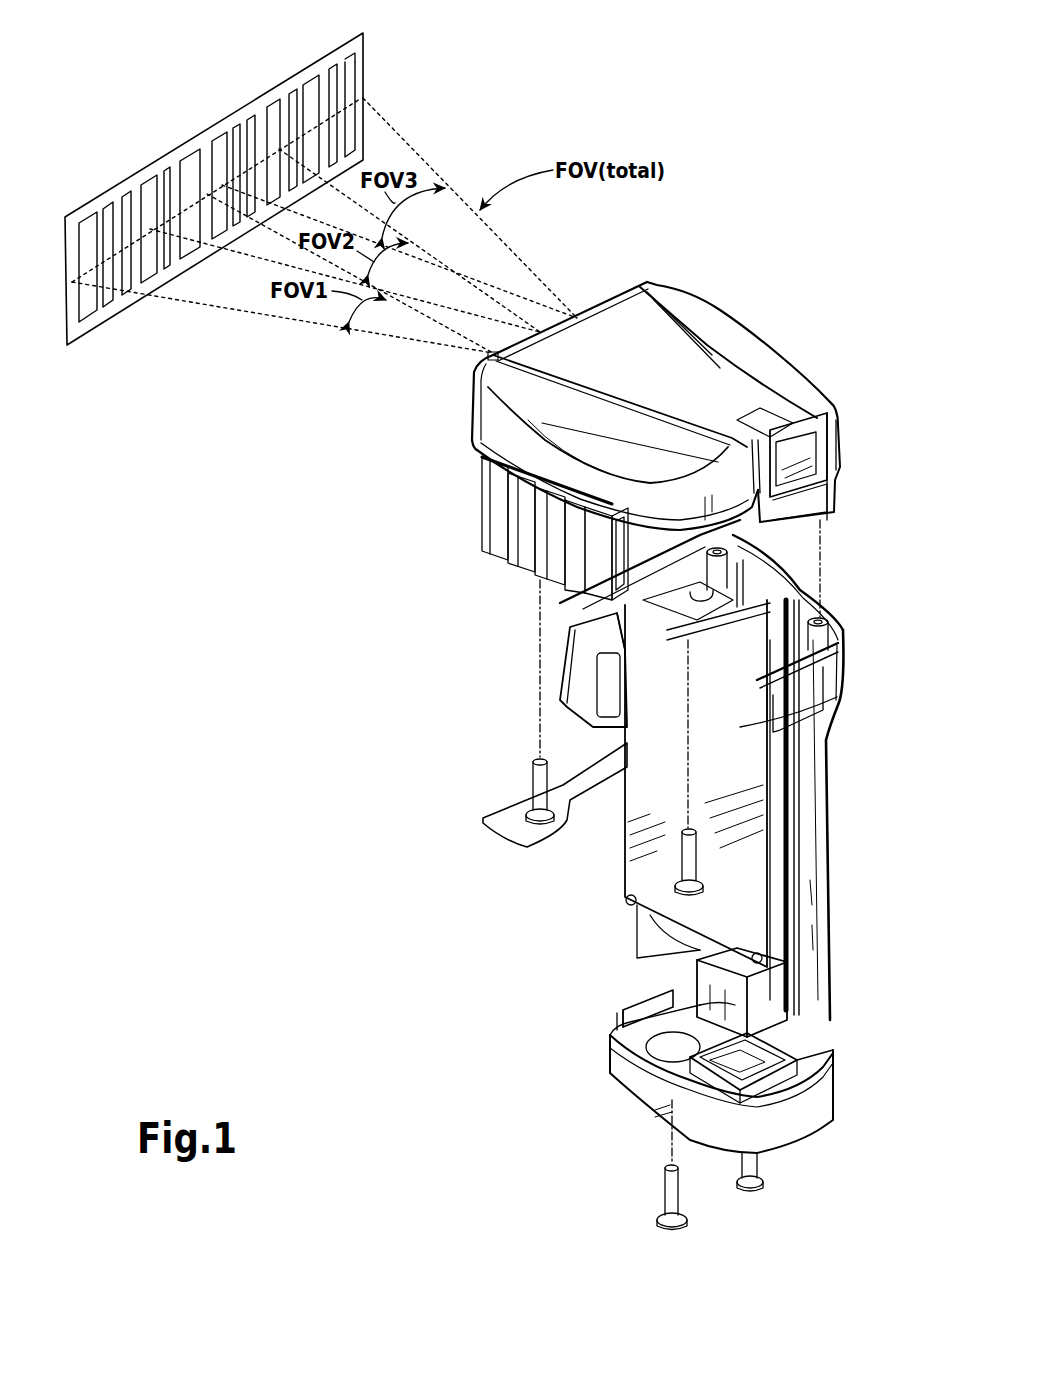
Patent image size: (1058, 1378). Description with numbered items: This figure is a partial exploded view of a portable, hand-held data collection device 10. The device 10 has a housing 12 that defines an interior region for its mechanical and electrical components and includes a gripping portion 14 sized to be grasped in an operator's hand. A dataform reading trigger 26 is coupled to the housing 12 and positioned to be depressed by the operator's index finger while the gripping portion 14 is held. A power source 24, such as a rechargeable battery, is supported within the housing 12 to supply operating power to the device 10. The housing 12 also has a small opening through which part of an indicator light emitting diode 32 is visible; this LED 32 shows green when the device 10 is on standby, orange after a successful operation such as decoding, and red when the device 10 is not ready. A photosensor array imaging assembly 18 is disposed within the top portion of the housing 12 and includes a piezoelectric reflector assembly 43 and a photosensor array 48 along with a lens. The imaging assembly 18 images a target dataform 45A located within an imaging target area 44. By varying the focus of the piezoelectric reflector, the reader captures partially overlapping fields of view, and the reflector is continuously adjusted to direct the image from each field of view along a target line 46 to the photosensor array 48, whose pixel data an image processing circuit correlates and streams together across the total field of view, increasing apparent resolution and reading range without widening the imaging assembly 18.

The portable data collection device 10 is at (766, 312).
The housing 12 is at (840, 753).
The gripping portion 14 is at (810, 877).
The photosensor array imaging assembly 18 is at (499, 508).
The power source 24 is at (767, 1000).
The dataform reading trigger 26 is at (583, 690).
The indicator light emitting diode 32 is at (790, 457).
The piezoelectric reflector assembly 43 is at (493, 528).
The imaging target area 44 is at (153, 160).
The target dataform 45A is at (363, 40).
The target line 46 is at (360, 93).
The photosensor array 48 is at (627, 543).